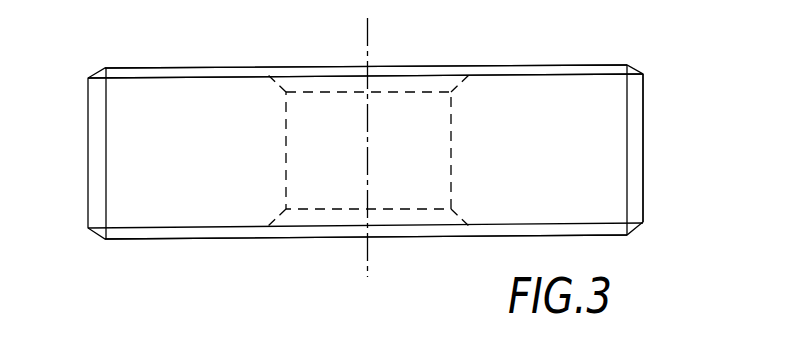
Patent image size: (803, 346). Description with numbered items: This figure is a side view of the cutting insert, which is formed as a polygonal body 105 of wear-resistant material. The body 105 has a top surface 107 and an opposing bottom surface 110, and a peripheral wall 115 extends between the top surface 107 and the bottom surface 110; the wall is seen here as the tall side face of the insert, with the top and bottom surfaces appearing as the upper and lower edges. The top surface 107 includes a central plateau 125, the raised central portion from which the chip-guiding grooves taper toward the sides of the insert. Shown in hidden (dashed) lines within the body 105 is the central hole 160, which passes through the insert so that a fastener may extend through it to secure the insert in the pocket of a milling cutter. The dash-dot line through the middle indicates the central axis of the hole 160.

The polygonal body 105 is at (645, 148).
The top surface 107 is at (582, 64).
The bottom surface 110 is at (168, 240).
The peripheral wall 115 is at (645, 98).
The central plateau 125 is at (168, 68).
The central hole 160 is at (323, 157).